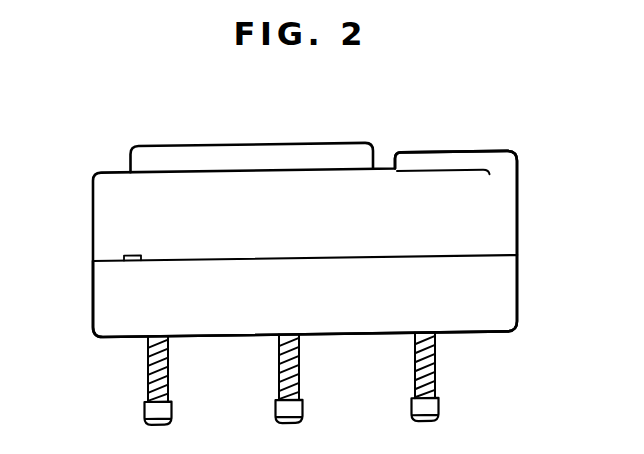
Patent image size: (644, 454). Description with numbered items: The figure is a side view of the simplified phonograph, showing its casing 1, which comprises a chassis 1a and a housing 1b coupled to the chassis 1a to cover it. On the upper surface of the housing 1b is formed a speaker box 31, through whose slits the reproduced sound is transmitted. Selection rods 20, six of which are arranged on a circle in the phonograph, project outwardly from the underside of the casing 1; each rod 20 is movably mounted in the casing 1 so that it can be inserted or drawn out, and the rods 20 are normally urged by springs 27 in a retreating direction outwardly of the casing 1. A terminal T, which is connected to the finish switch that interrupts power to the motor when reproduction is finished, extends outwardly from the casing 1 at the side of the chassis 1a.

The casing 1 is at (465, 152).
The chassis 1a is at (518, 278).
The housing 1b is at (518, 183).
The speaker box 31 is at (283, 143).
The terminal T is at (124, 256).
The spring 27 is at (159, 373).
The selection rod 20 is at (172, 410).